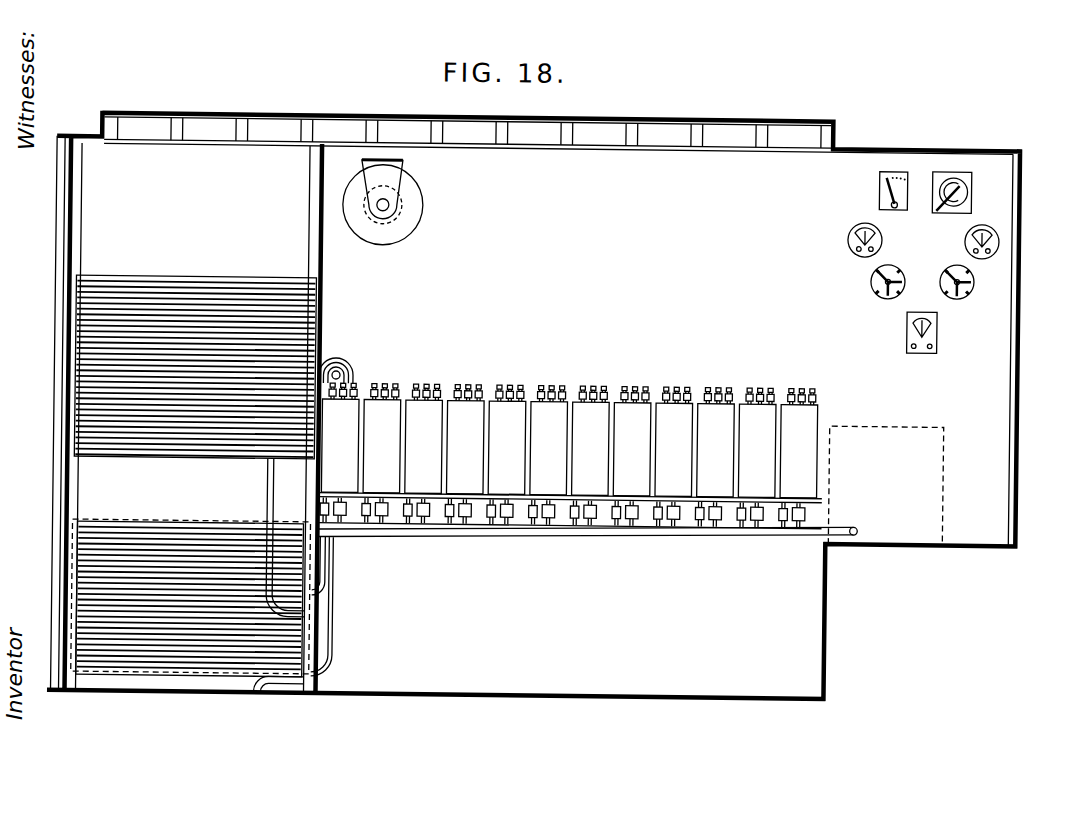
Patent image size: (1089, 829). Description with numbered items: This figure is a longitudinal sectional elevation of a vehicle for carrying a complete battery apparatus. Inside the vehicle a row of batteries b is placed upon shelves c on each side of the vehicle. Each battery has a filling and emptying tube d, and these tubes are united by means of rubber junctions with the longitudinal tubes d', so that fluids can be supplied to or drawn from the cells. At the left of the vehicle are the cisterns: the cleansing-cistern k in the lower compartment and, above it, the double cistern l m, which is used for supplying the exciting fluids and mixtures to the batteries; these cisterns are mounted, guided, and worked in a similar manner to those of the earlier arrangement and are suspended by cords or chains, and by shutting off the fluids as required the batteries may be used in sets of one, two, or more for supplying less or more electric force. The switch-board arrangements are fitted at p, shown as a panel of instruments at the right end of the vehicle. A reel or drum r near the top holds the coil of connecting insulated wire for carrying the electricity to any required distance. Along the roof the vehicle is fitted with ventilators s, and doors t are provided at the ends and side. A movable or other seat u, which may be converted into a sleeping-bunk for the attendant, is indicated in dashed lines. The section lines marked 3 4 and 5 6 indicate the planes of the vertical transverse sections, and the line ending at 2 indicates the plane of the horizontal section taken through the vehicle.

The section line 3 4 3 is at (64, 128).
The section line 5 6 5 is at (364, 107).
The section line 3 4 is at (59, 700).
The section line 5 6 is at (359, 697).
The section line 1 2 is at (1020, 386).
The doors t is at (823, 727).
The ventilators s is at (469, 133).
The reel or drum r is at (389, 203).
The double cistern (with m) l is at (516, 303).
The double cistern (with l) m is at (195, 367).
The cleansing-cistern k is at (191, 598).
The batteries b is at (569, 455).
The shelves c is at (823, 493).
The filling and emptying tubes d is at (570, 511).
The longitudinal tubes d' is at (603, 523).
The movable seat u is at (885, 485).
The switch-board arrangements p is at (923, 262).